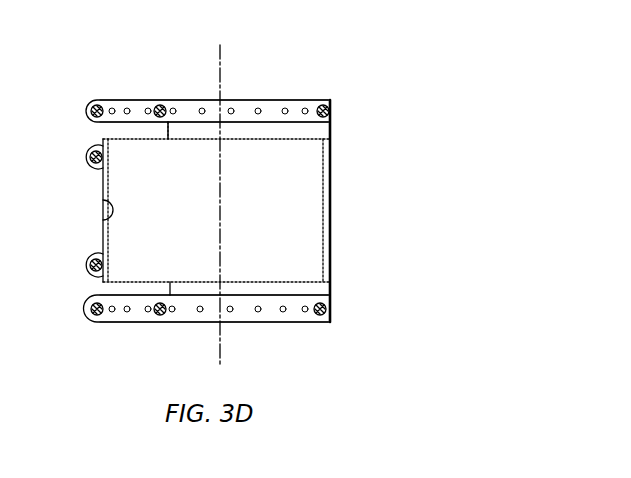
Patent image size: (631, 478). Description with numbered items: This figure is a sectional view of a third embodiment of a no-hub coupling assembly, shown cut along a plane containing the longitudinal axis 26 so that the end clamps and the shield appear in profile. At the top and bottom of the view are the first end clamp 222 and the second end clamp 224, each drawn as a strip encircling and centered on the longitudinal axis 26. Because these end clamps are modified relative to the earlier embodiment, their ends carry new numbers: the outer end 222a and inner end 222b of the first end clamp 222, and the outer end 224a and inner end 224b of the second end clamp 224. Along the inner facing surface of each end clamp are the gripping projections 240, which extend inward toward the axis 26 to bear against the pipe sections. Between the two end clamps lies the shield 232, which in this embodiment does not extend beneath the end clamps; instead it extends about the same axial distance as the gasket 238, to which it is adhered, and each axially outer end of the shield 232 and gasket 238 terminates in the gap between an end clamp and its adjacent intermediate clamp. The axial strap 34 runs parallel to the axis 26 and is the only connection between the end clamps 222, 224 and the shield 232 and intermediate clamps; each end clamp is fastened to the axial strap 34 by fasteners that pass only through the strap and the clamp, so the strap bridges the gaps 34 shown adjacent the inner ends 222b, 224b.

The longitudinal axis 26 is at (222, 47).
The first end clamp 222 is at (190, 104).
The outer end of first end clamp 222a is at (314, 98).
The inner end of first end clamp 222b is at (297, 125).
The second end clamp 224 is at (127, 320).
The outer end of second end clamp 224a is at (310, 322).
The inner end of second end clamp 224b is at (312, 294).
The gripping projections 240 is at (259, 108).
The axial strap 34 is at (144, 136).
The shield 232 is at (101, 189).
The gasket 238 is at (101, 224).